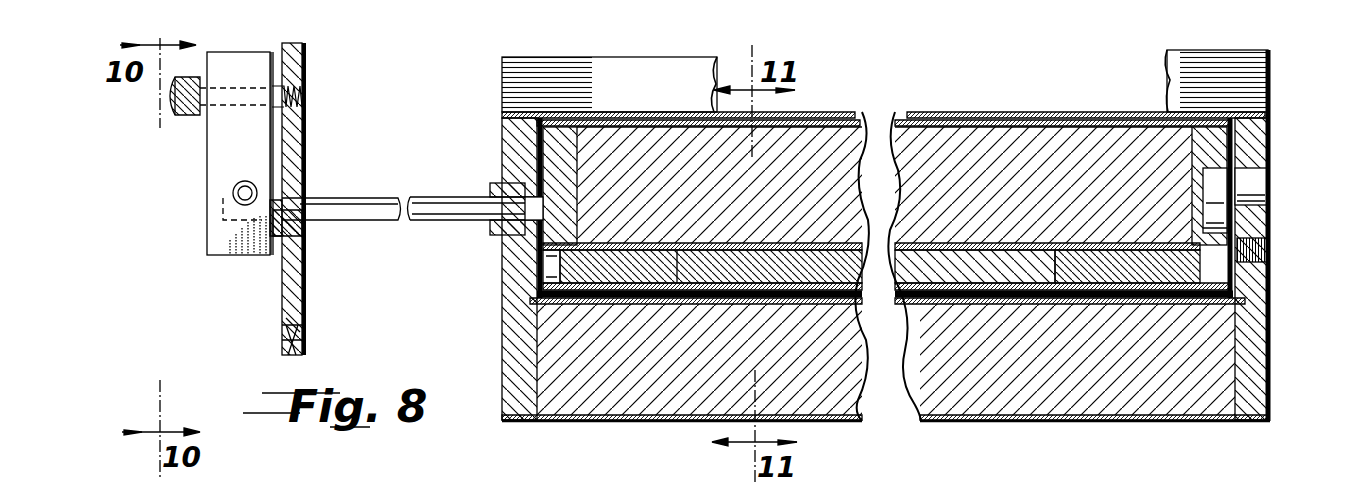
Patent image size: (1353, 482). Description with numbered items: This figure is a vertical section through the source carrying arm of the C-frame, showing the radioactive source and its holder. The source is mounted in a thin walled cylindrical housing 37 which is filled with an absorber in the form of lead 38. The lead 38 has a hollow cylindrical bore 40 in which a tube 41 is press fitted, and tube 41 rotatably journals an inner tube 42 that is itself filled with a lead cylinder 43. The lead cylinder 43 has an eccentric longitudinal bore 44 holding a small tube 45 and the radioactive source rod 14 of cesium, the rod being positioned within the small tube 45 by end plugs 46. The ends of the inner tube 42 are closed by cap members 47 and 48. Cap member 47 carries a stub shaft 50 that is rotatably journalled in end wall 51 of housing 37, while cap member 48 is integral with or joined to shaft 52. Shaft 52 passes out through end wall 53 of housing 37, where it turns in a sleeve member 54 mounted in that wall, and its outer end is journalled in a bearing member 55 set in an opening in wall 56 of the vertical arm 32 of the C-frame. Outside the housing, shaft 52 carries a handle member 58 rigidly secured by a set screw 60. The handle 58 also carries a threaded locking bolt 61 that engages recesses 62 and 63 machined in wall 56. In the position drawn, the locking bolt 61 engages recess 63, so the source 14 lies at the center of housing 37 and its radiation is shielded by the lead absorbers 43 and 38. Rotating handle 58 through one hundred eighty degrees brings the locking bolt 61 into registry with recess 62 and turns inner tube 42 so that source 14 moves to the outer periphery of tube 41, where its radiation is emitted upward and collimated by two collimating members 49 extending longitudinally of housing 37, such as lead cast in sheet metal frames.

The radioactive source rod 14 is at (868, 270).
The vertical arm 32 is at (306, 249).
The housing 37 is at (1045, 421).
The lead 38 is at (1150, 380).
The hollow cylindrical bore 40 is at (610, 116).
The tube 41 is at (1195, 300).
The inner tube 42 is at (1044, 128).
The lead cylinder 43 is at (1118, 160).
The eccentric longitudinal bore 44 is at (645, 247).
The small tube 45 is at (1163, 242).
The end plugs 46 is at (575, 263).
The cap member 47 is at (1213, 140).
The cap member 48 is at (558, 145).
The collimating members 49 is at (1248, 75).
The stub shaft 50 is at (1253, 193).
The end wall 51 is at (1255, 350).
The shaft 52 is at (430, 197).
The end wall 53 is at (515, 279).
The sleeve member 54 is at (495, 183).
The bearing member 55 is at (296, 206).
The wall 56 is at (298, 323).
The handle member 58 is at (214, 244).
The set screw 60 is at (233, 193).
The threaded locking bolt 61 is at (178, 110).
The recess 62 is at (285, 336).
The recess 63 is at (296, 86).